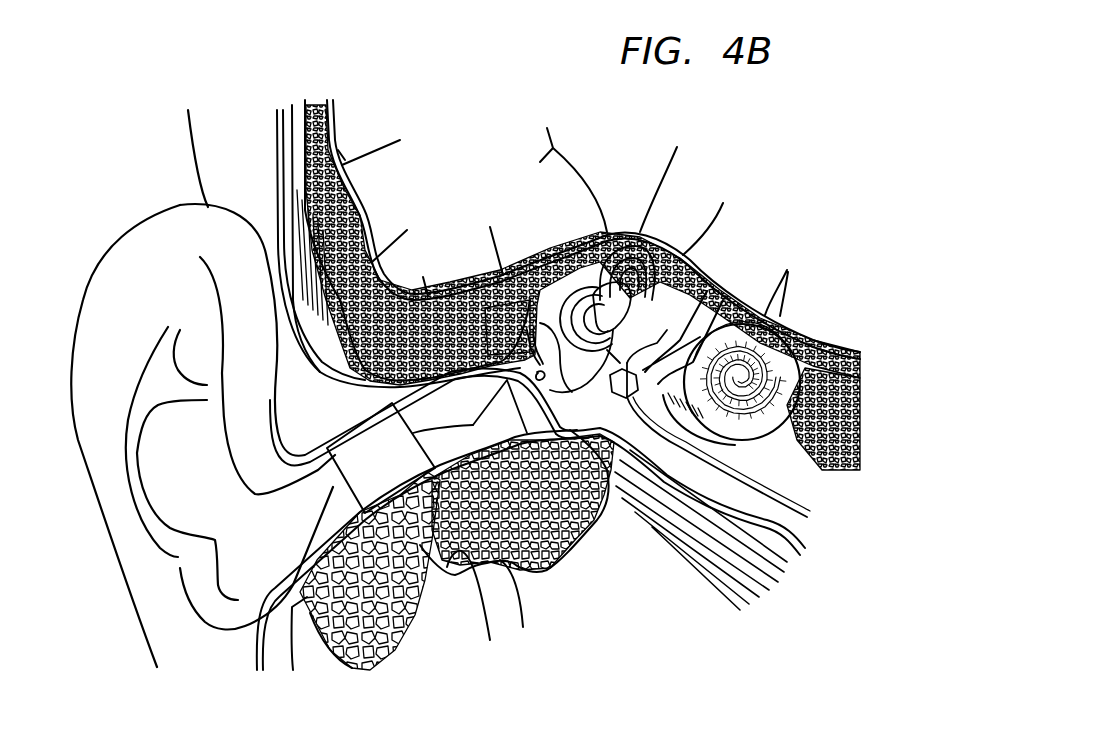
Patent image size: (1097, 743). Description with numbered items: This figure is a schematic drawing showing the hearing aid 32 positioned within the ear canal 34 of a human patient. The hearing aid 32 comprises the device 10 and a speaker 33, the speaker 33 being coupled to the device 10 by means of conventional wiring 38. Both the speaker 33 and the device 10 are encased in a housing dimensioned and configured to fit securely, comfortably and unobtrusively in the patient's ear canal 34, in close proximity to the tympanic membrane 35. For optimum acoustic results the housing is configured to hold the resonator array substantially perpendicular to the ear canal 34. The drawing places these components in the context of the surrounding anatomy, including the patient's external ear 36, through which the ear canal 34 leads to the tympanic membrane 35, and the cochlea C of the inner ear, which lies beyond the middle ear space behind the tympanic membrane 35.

The device 10 is at (380, 473).
The hearing aid 32 is at (305, 410).
The speaker 33 is at (507, 420).
The ear canal 34 is at (465, 403).
The tympanic membrane 35 is at (600, 470).
The ear 36 is at (132, 533).
The wiring 38 is at (447, 440).
The cochlea C is at (747, 440).